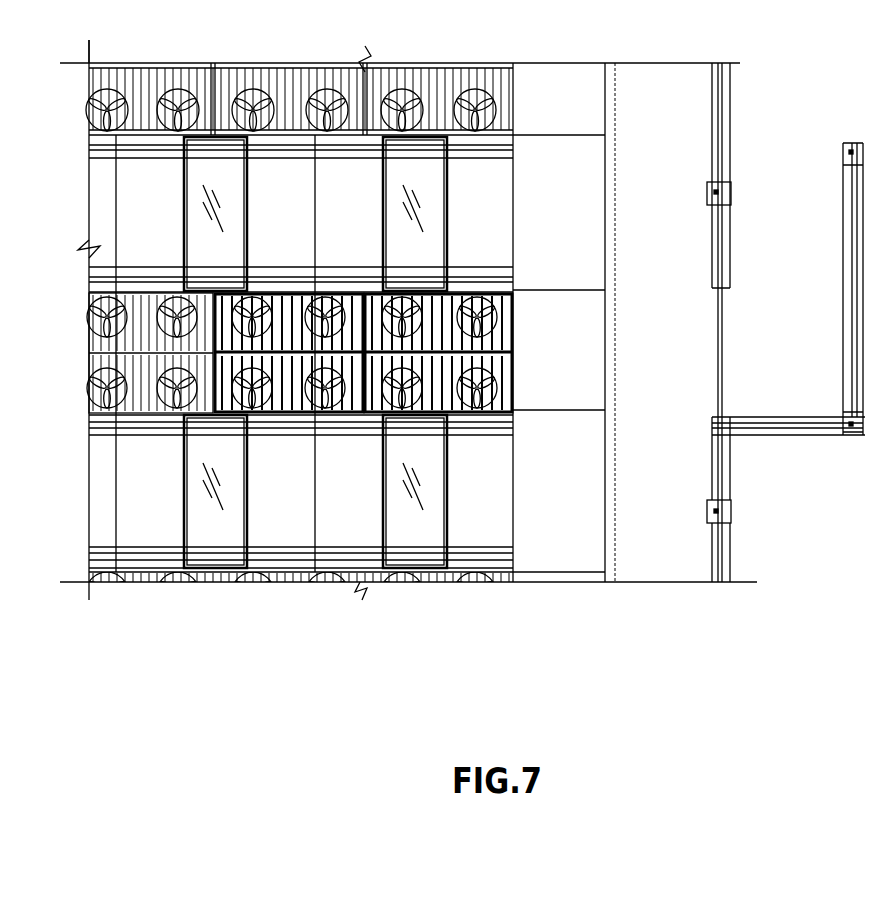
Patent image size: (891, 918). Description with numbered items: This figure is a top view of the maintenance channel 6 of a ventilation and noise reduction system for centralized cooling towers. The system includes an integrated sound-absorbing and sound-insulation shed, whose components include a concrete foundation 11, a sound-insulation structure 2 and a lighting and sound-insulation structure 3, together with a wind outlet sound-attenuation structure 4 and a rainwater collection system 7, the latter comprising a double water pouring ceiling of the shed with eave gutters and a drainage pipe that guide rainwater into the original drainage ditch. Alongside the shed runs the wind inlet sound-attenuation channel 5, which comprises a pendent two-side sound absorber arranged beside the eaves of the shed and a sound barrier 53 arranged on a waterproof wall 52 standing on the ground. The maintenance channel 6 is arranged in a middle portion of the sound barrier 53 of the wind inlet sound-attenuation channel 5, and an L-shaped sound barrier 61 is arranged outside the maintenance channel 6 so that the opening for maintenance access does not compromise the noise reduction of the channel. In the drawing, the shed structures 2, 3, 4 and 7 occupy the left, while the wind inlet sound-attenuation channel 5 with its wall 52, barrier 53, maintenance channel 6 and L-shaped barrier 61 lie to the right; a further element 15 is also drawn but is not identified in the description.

The rainwater collection system 7 is at (608, 97).
The wind outlet sound-attenuation structure 4 is at (66, 341).
The lighting and sound-insulation structure 3 is at (418, 522).
The partition wall 15 is at (513, 522).
The sound-insulation structure 2 is at (565, 540).
The wind inlet sound-attenuation channel 5 is at (668, 540).
The maintenance channel 6 is at (728, 345).
The L-shaped sound barrier 61 is at (816, 425).
The waterproof wall 52 is at (727, 470).
The concrete foundation 11 is at (726, 512).
The sound barrier 53 is at (720, 548).